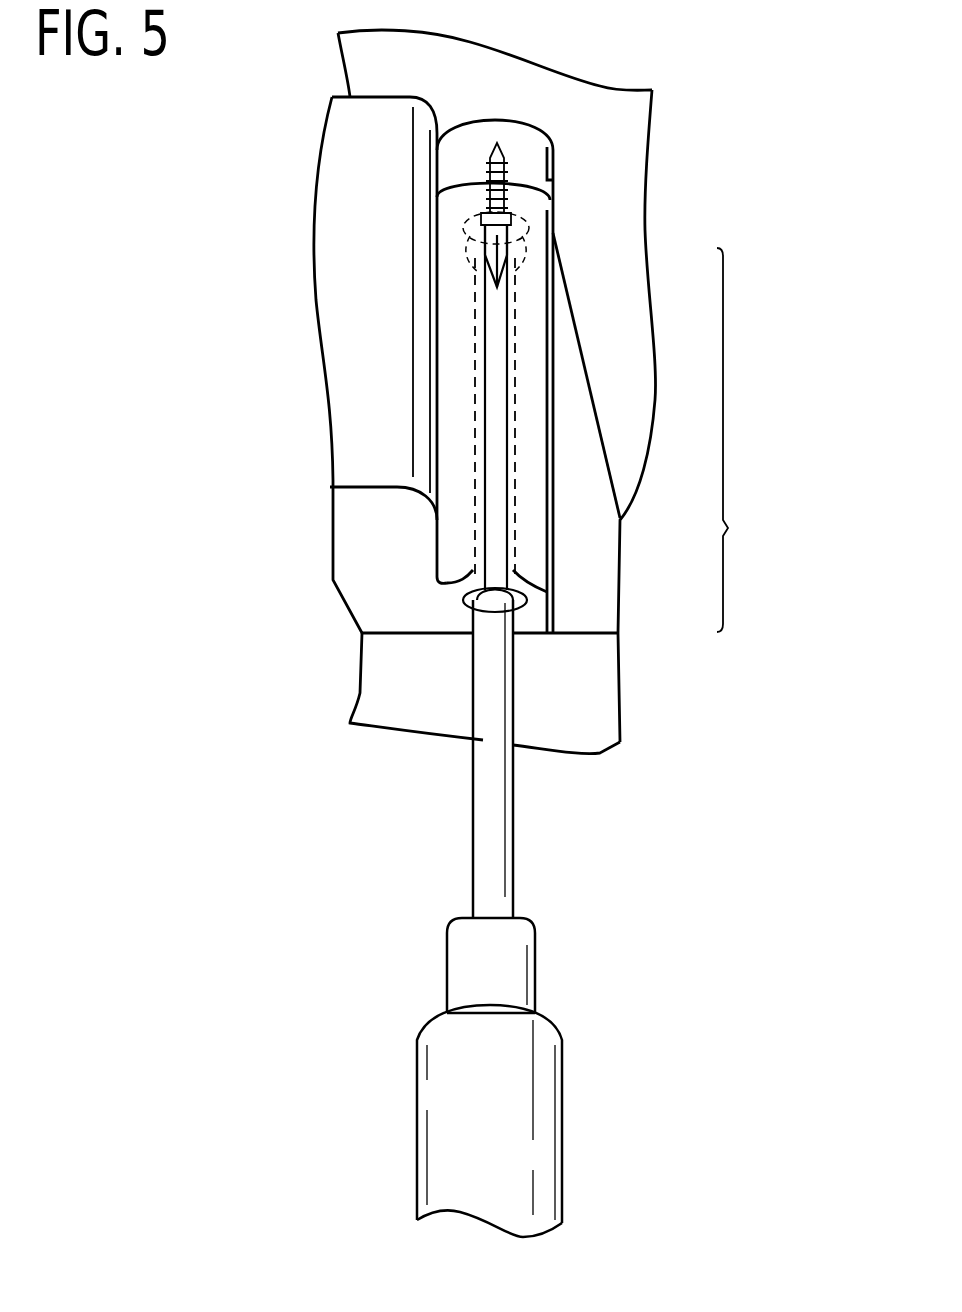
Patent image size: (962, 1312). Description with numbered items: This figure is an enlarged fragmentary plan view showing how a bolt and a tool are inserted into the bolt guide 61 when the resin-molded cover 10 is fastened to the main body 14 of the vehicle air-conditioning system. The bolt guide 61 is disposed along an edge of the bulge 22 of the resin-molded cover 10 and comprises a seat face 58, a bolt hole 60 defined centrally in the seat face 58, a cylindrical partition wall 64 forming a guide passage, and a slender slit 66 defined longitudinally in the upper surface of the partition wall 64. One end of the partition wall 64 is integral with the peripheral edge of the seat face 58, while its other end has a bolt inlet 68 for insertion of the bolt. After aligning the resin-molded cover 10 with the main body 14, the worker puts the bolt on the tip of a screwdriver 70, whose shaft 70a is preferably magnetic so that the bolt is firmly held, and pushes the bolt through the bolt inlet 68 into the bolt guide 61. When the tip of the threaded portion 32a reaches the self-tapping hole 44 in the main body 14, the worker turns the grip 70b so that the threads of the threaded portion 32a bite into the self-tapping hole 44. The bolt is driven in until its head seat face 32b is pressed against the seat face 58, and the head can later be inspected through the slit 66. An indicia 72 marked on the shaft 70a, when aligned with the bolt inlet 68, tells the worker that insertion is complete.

The resin-molded cover 10 is at (307, 283).
The main body 14 is at (567, 63).
The bulge 22 is at (365, 415).
The threaded portion 32a is at (507, 165).
The head seat face 32b is at (487, 210).
The self-tapping hole 44 is at (515, 180).
The seat face 58 is at (540, 238).
The bolt hole 60 is at (518, 210).
The bolt guide 61 is at (743, 440).
The partition wall 64 is at (463, 440).
The slit 66 is at (495, 498).
The bolt inlet 68 is at (520, 610).
The screwdriver 70 is at (433, 918).
The shaft 70a is at (483, 813).
The grip 70b is at (435, 1072).
The indicia 72 is at (460, 600).